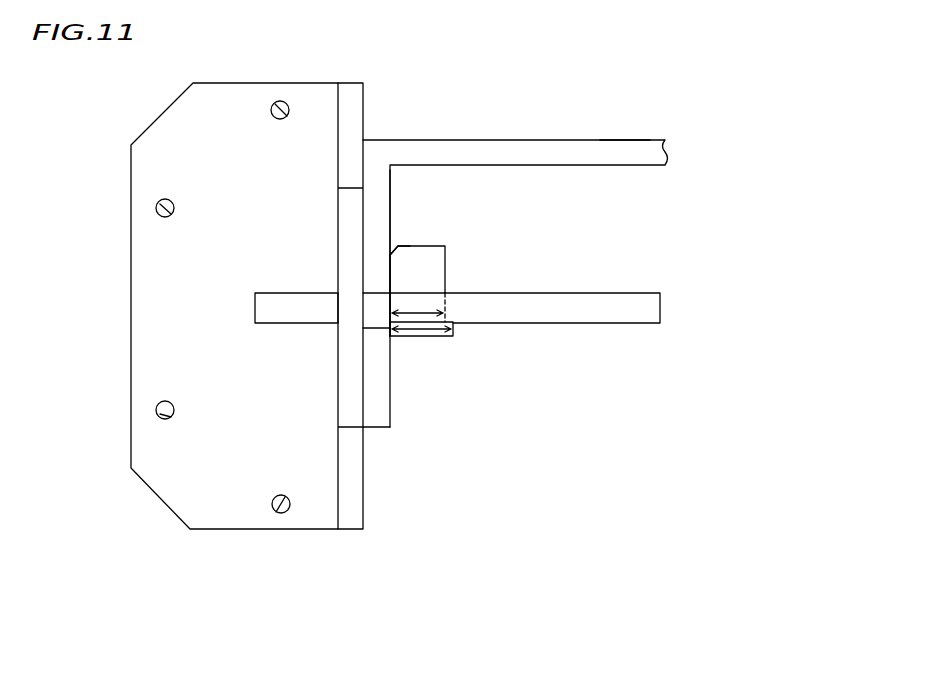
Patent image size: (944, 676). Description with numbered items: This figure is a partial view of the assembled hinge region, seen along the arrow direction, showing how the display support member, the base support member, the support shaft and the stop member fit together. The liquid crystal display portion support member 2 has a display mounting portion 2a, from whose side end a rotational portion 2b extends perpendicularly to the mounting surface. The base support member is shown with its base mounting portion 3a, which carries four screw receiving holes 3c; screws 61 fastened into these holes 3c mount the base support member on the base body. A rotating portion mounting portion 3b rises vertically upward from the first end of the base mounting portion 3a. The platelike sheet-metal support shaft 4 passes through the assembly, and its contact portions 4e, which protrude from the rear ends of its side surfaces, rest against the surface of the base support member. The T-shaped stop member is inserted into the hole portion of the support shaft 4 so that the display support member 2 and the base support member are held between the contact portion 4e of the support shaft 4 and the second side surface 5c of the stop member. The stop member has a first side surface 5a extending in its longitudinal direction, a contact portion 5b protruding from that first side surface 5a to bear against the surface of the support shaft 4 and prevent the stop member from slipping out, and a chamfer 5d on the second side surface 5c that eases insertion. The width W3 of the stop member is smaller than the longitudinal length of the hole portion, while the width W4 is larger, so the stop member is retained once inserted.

The liquid crystal display portion support member 2 is at (617, 158).
The display mounting portion 2a is at (571, 158).
The rotational portion 2b is at (378, 192).
The base mounting portion 3a is at (170, 148).
The rotating portion mounting portion 3b is at (347, 187).
The screw receiving hole 3c is at (274, 103).
The support shaft 4 is at (565, 323).
The contact portion 4e is at (283, 301).
The first side surface 5a is at (445, 263).
The contact portion 5b is at (453, 336).
The second side surface 5c is at (390, 287).
The chamfer 5d is at (395, 253).
The screw 61 is at (268, 111).
The width of the stop member W3 is at (417, 308).
The width of the stop member W4 is at (442, 337).